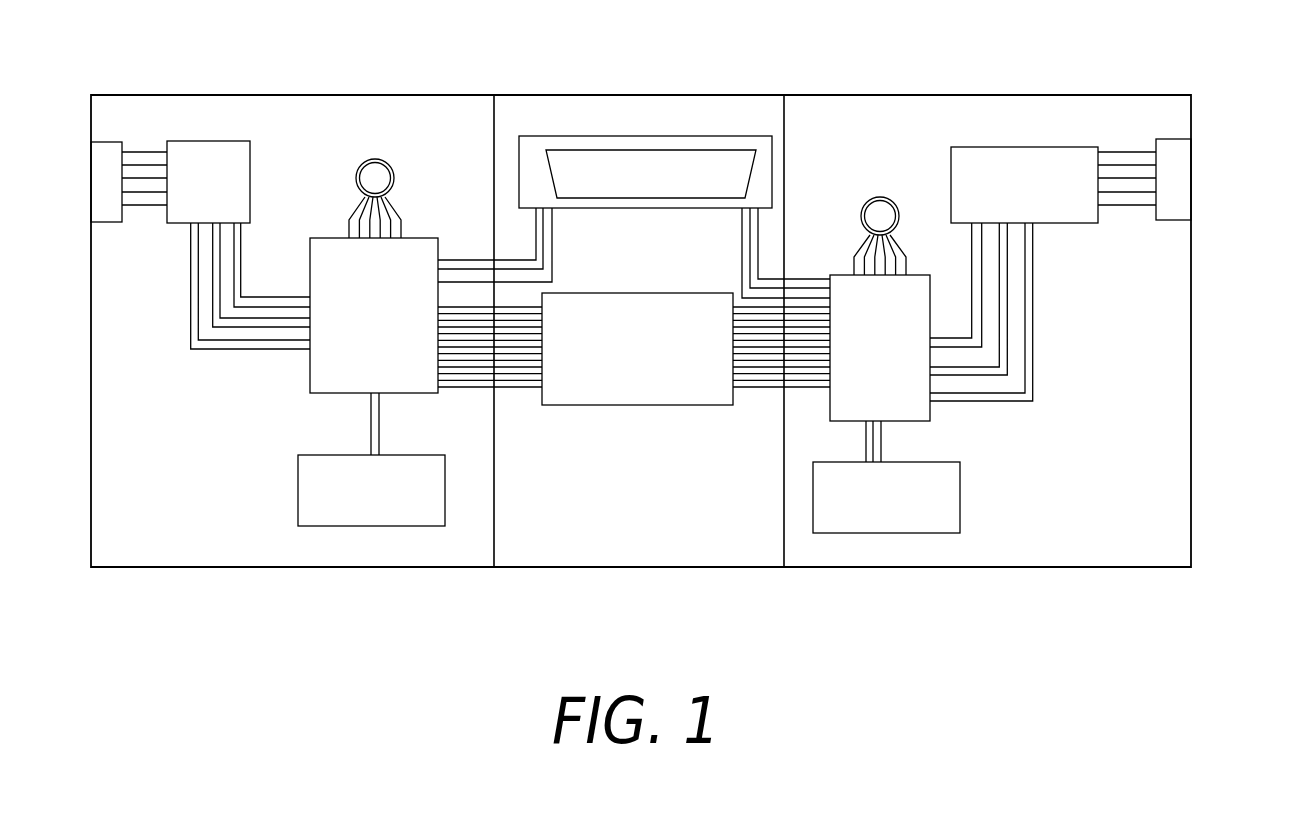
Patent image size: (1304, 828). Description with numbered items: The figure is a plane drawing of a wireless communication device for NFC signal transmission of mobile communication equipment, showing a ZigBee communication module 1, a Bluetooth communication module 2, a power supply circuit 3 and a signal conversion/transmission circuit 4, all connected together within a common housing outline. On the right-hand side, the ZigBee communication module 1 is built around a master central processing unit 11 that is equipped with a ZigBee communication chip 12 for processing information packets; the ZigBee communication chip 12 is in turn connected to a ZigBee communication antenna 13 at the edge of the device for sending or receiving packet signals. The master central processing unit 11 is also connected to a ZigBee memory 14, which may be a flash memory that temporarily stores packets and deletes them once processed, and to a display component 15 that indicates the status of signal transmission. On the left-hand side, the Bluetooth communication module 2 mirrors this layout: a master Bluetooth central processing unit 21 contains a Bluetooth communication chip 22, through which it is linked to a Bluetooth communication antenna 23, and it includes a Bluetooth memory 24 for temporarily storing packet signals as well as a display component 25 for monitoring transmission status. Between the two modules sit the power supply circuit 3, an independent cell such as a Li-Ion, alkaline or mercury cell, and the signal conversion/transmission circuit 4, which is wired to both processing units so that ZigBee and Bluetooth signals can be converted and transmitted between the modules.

The ZigBee communication module 1 is at (1182, 527).
The Bluetooth communication module 2 is at (97, 535).
The power supply circuit 3 is at (643, 140).
The signal conversion/transmission circuit 4 is at (637, 393).
The master central processing unit 11 is at (925, 412).
The ZigBee communication chip 12 is at (1023, 167).
The ZigBee communication antenna 13 is at (1177, 163).
The ZigBee memory 14 is at (922, 524).
The display component 15 is at (880, 218).
The master Bluetooth central processing unit 21 is at (322, 375).
The Bluetooth communication chip 22 is at (204, 151).
The Bluetooth communication antenna 23 is at (102, 184).
The Bluetooth memory 24 is at (377, 511).
The display component 25 is at (373, 177).